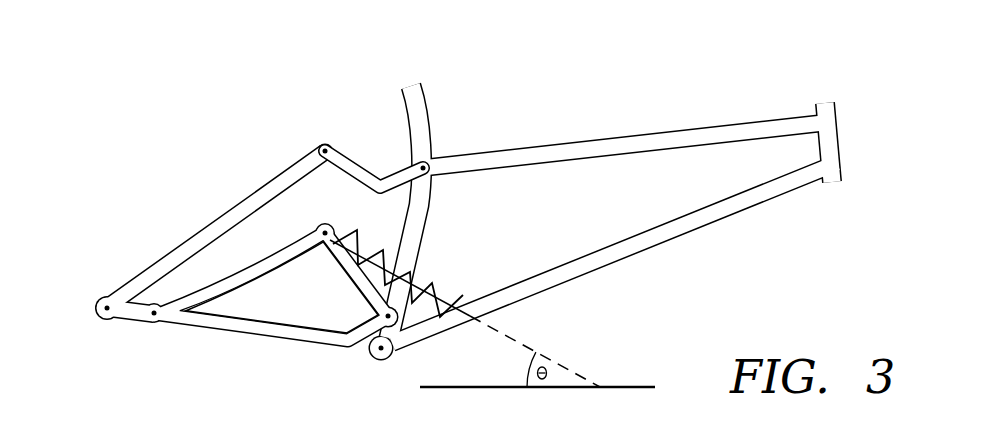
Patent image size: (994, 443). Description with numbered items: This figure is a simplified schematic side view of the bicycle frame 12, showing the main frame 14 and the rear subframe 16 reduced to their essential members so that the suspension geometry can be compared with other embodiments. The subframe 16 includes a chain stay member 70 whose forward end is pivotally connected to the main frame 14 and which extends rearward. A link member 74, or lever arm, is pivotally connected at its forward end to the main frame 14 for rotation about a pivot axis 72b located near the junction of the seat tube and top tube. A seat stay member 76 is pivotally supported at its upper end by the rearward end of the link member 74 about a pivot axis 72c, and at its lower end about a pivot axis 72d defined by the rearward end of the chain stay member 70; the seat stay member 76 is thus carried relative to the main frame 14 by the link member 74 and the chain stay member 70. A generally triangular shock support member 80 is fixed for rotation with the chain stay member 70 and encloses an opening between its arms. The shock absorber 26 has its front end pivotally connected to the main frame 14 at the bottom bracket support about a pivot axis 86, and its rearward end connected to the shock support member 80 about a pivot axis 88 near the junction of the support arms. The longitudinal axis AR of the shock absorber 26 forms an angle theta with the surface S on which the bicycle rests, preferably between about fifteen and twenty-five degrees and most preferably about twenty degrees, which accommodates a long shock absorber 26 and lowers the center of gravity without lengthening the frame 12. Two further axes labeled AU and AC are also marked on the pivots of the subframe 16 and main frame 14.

The bicycle frame 12 is at (443, 208).
The main frame 14 is at (690, 102).
The subframe 16 is at (224, 240).
The shock absorber 26 is at (430, 282).
The chain stay member 70 is at (253, 343).
The pivot axis 72b is at (425, 166).
The pivot axis 72c is at (325, 149).
The pivot axis 72d is at (155, 321).
The link member 74 is at (351, 163).
The seat stay member 76 is at (202, 229).
The shock support member 80 is at (252, 276).
The pivot axis 86 is at (468, 312).
The pivot axis 88 is at (324, 231).
The upper pivot axis AU is at (79, 332).
The crank axis AC is at (381, 352).
The longitudinal axis of the shock absorber AR is at (512, 338).
The surface S is at (634, 387).